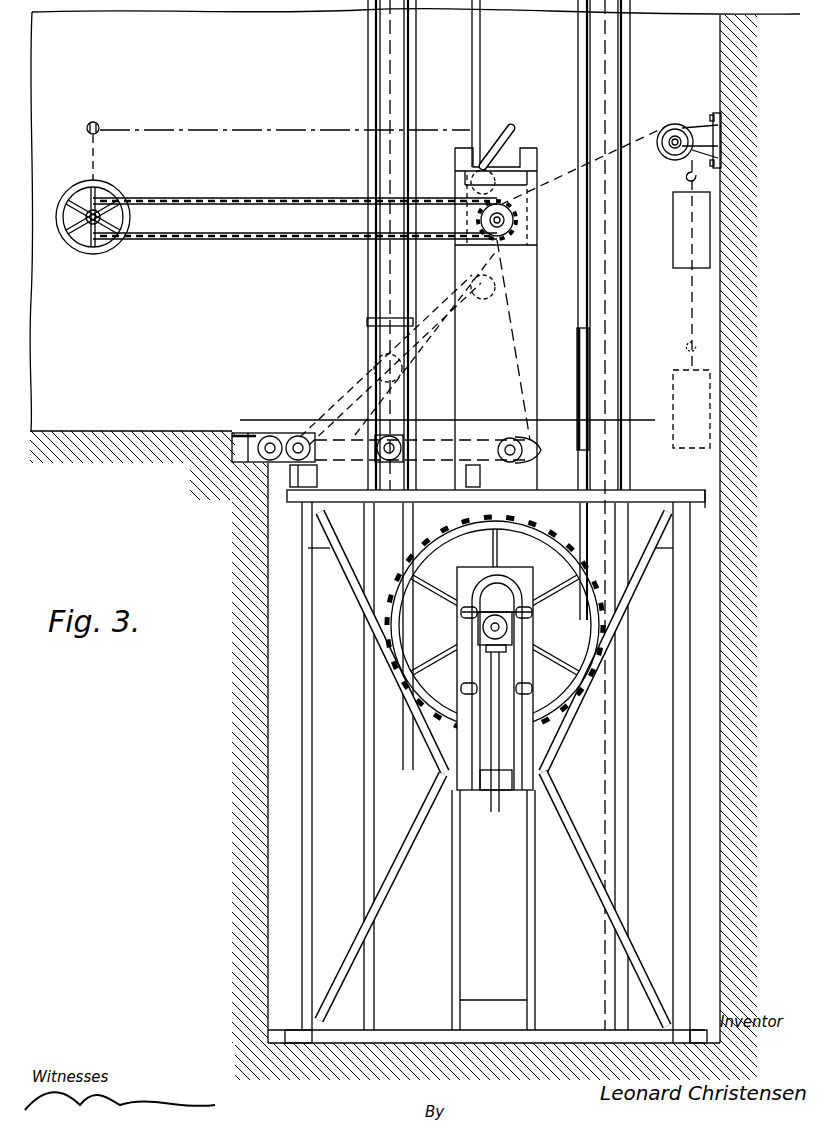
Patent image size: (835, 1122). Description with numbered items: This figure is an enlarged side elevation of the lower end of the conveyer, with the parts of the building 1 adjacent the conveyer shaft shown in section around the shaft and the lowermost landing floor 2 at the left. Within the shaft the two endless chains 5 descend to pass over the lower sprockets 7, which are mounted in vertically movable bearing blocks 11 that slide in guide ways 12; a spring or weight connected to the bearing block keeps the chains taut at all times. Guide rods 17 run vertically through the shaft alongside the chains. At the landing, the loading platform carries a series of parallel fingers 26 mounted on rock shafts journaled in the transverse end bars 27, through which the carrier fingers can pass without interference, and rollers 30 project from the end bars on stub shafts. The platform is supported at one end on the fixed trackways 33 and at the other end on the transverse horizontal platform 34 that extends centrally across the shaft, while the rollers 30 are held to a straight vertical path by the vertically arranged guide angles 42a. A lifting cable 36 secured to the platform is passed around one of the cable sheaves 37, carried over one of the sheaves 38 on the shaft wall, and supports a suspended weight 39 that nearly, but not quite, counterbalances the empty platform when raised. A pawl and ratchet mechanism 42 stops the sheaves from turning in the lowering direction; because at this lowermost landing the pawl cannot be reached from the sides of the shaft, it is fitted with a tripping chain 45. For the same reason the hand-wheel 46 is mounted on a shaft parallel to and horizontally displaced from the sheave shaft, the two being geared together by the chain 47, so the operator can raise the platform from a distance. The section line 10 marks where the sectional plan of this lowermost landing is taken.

The parts of the building 1 is at (415, 544).
The lowermost landing floor 2 is at (132, 441).
The endless chains 5 is at (390, 140).
The lower sprockets 7 is at (552, 730).
The section line 10 is at (445, 420).
The bearing blocks 11 is at (479, 803).
The guide ways 12 is at (460, 948).
The guide rods 17 is at (370, 35).
The fingers 26 is at (336, 466).
The end bars 27 is at (423, 438).
The rollers 30 is at (398, 438).
The fixed trackways 33 is at (258, 440).
The transverse horizontal platform 34 is at (475, 466).
The lifting cable 36 is at (508, 355).
The cable sheaves 37 is at (516, 219).
The sheaves 38 is at (689, 137).
The suspended weights 39 is at (690, 262).
The pawl and ratchet mechanism 42 is at (505, 187).
The guide angles 42a is at (375, 344).
The tripping chain 45 is at (320, 122).
The hand-wheel 46 is at (108, 250).
The chain 47 is at (272, 242).